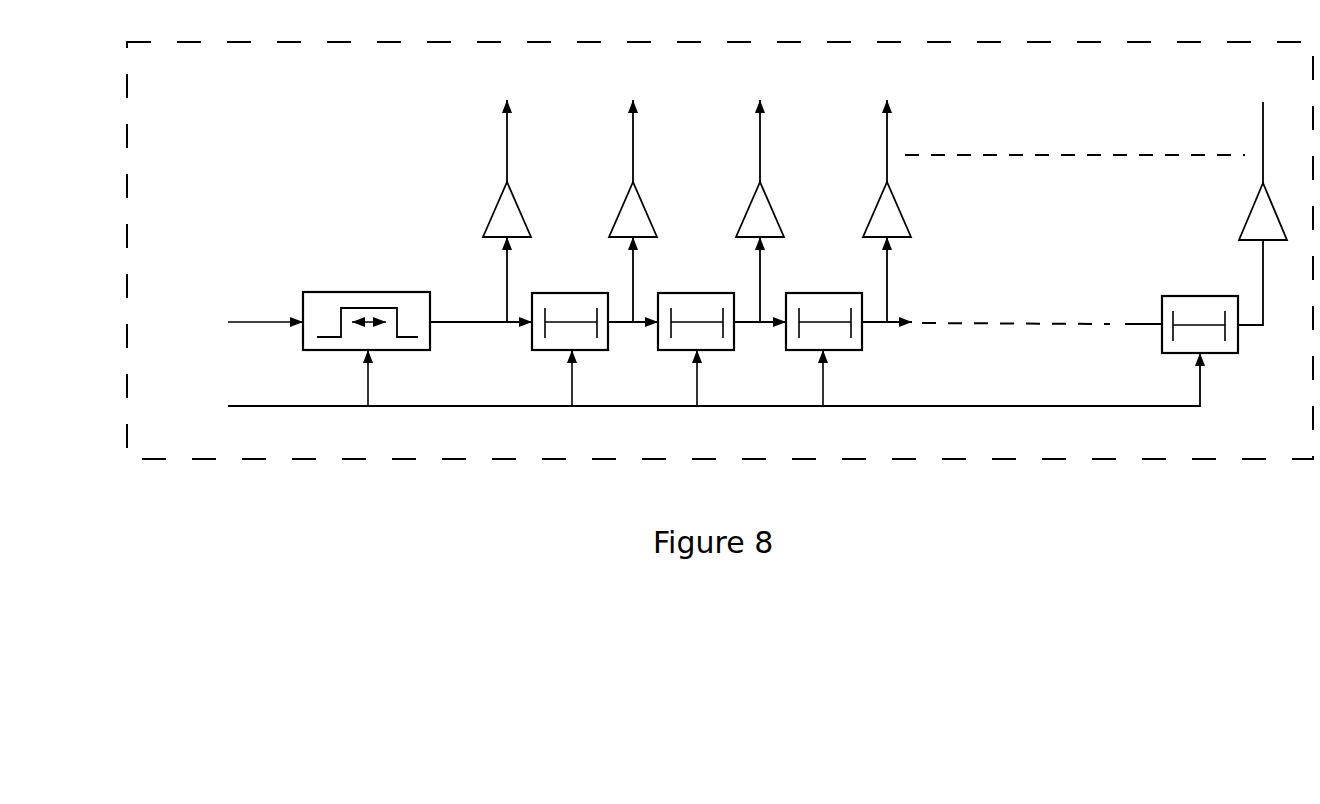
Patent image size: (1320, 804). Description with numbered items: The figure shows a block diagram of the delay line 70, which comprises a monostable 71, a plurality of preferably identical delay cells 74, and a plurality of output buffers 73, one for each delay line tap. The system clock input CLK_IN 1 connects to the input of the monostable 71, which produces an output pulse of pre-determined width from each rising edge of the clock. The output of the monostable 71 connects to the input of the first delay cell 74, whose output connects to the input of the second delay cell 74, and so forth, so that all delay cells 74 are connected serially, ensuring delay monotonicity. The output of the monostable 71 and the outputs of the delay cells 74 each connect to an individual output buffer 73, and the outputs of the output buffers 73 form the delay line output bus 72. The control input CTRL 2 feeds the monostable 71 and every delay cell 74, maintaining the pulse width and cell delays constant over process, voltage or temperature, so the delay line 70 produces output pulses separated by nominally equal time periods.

The clock input CLK_IN 1 is at (278, 308).
The control input CTRL 2 is at (278, 392).
The delay line 70 is at (268, 467).
The monostable 71 is at (352, 283).
The delay line output bus 72 is at (458, 127).
The output buffer 73 is at (484, 210).
The delay cell 74 is at (528, 357).